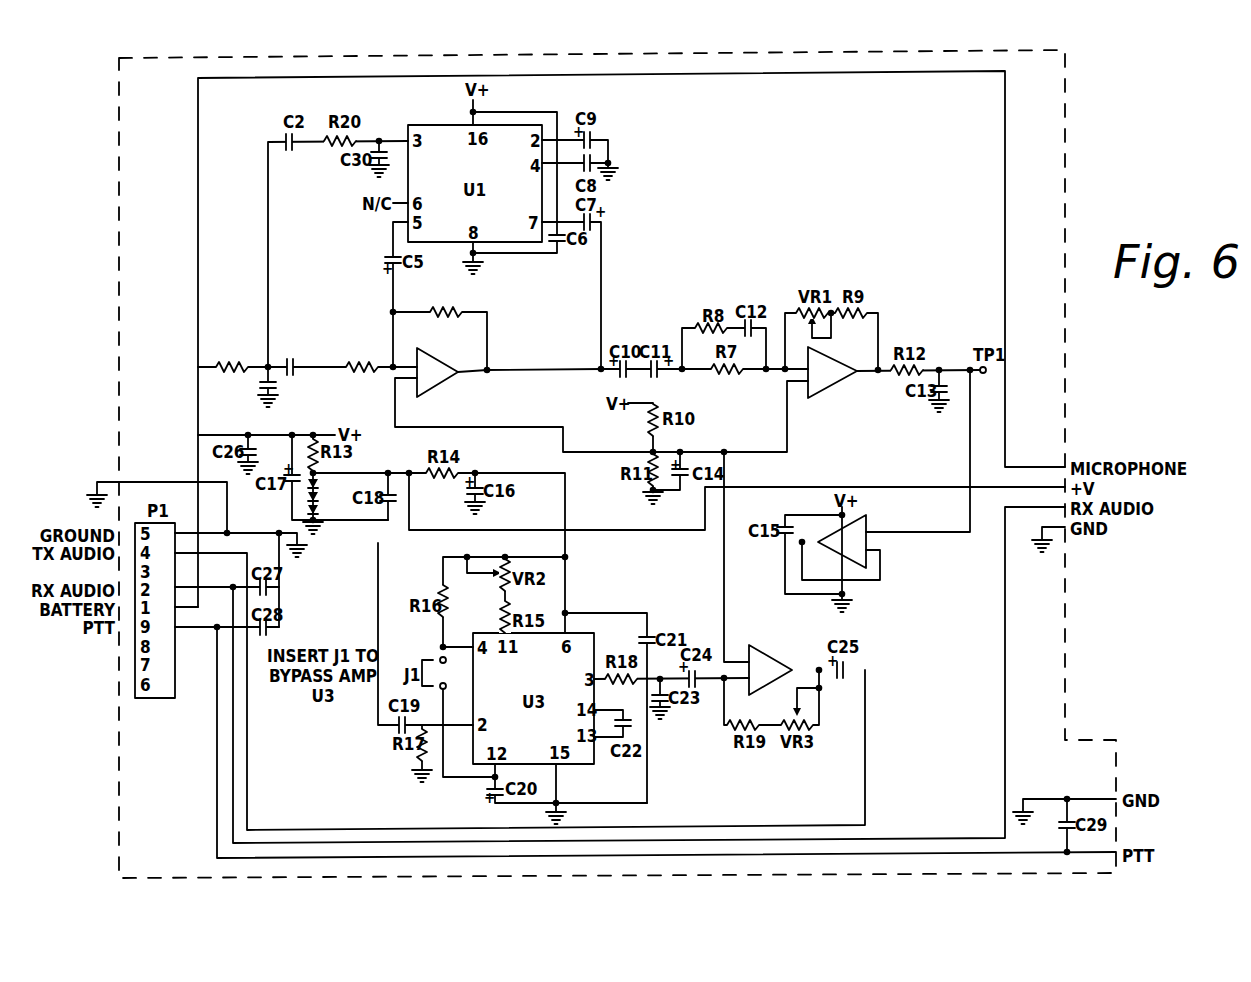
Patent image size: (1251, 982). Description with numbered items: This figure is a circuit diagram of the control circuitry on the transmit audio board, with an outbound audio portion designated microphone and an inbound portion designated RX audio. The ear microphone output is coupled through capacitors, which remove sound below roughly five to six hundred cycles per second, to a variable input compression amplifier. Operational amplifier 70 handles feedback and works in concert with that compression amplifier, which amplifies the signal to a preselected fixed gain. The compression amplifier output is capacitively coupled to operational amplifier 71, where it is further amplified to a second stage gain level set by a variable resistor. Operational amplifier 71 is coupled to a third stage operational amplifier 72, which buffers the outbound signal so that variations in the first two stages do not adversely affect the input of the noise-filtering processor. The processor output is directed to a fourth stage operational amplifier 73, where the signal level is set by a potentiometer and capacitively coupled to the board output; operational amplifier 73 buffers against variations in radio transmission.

The operational amplifier 70 is at (436, 388).
The operational amplifier 71 is at (833, 385).
The third stage operational amplifier 72 is at (853, 521).
The fourth stage operational amplifier 73 is at (770, 647).